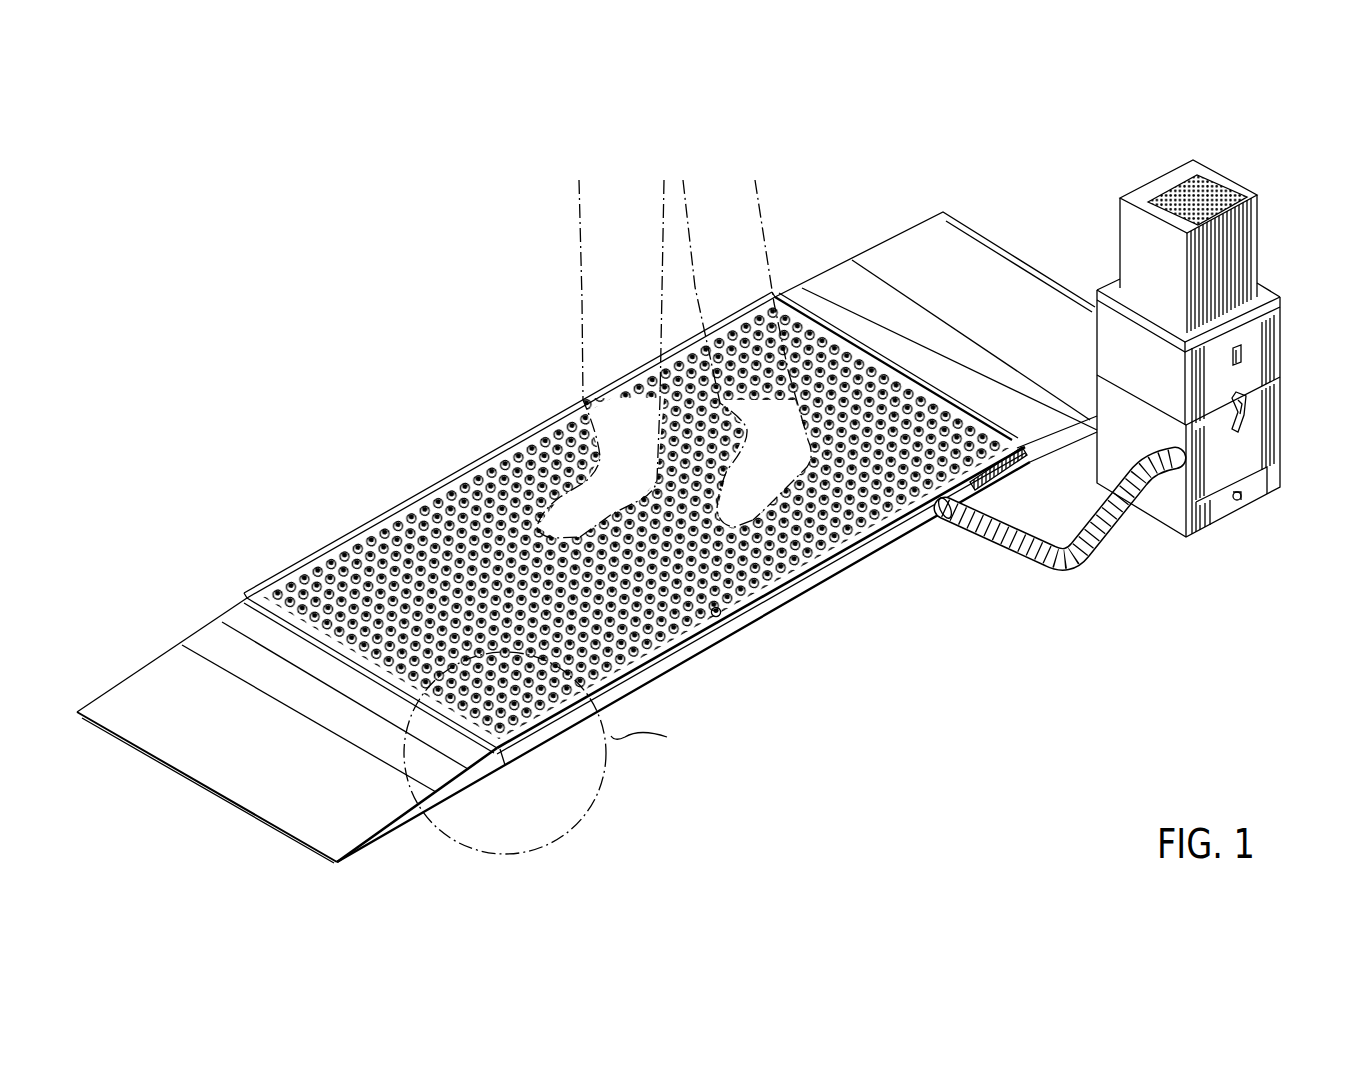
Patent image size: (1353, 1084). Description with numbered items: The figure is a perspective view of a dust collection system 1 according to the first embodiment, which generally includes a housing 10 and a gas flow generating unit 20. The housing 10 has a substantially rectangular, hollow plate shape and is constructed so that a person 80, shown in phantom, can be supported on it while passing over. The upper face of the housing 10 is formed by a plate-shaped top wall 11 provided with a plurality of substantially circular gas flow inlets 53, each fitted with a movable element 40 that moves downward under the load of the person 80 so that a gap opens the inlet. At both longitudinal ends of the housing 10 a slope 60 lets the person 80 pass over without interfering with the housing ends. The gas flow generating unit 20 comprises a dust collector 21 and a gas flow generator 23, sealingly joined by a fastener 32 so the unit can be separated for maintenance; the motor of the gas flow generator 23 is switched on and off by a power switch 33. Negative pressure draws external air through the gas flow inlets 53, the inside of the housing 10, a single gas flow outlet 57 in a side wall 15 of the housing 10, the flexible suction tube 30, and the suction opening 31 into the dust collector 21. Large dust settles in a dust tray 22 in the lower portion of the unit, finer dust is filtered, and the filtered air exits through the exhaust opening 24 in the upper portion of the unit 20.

The dust collection system 1 is at (1029, 164).
The housing 10 is at (518, 413).
The top wall 11 is at (276, 592).
The side wall 15 is at (790, 594).
The gas flow generating unit 20 is at (1212, 334).
The dust collector 21 is at (1262, 452).
The dust tray 22 is at (1255, 490).
The gas flow generator 23 is at (1270, 338).
The exhaust opening 24 is at (1235, 197).
The suction tube 30 is at (1000, 542).
The suction opening 31 is at (1190, 516).
The fastener 32 is at (1255, 412).
The power switch 33 is at (1245, 356).
The movable element 40 is at (720, 610).
The gas flow inlet 53 is at (714, 616).
The gas flow outlet 57 is at (937, 512).
The slope 60 is at (907, 250).
The person 80 is at (595, 256).